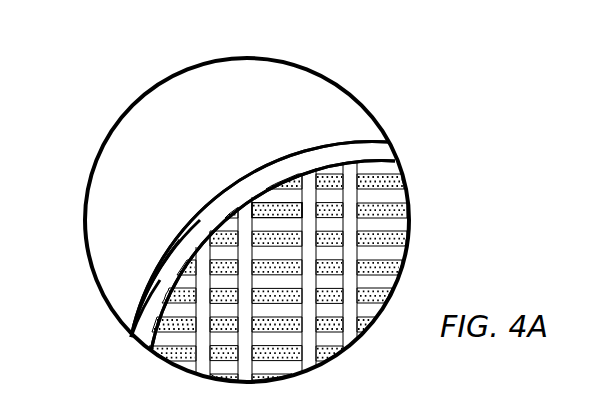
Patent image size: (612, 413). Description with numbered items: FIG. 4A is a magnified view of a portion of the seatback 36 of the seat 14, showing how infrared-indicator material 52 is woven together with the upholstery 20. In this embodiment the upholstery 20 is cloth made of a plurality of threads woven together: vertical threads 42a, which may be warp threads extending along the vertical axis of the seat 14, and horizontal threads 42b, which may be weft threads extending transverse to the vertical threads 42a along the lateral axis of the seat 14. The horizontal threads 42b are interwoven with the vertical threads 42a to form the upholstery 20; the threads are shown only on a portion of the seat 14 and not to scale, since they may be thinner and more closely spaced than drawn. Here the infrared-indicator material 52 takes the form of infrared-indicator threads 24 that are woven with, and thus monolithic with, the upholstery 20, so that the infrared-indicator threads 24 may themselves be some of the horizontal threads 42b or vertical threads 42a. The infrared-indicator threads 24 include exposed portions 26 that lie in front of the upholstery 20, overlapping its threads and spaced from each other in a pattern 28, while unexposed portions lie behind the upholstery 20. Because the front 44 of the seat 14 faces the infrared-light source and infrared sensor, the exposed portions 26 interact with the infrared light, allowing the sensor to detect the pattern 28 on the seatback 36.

The seat 14 is at (167, 257).
The upholstery 20 is at (243, 213).
The infrared-indicator threads 24 is at (277, 210).
The exposed portions 26 is at (375, 205).
The pattern 28 is at (225, 310).
The seatback 36 is at (160, 277).
The vertical threads 42a is at (184, 234).
The horizontal threads 42b is at (224, 221).
The front 44 is at (137, 303).
The infrared-indicator material 52 is at (283, 200).